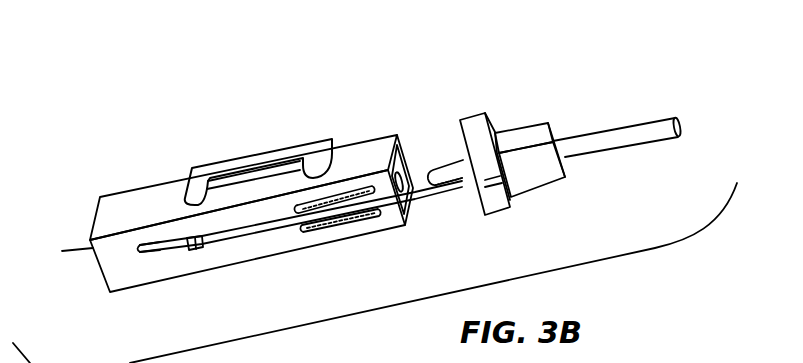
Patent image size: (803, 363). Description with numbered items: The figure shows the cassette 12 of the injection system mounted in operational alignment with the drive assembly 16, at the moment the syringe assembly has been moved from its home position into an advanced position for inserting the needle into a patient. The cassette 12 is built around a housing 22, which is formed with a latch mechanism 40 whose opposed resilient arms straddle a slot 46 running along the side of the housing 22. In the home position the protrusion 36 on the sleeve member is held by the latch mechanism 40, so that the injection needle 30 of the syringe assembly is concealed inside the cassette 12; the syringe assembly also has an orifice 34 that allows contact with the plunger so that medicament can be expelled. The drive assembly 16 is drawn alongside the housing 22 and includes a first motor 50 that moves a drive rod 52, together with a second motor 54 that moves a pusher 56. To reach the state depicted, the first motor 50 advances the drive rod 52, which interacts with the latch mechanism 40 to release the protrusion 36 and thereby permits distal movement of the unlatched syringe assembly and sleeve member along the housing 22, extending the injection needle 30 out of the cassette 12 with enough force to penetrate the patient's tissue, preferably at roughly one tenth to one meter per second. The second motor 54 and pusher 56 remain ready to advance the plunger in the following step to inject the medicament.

The cassette 12 is at (267, 145).
The drive assembly 16 is at (588, 148).
The housing 22 is at (140, 198).
The injection needle 30 is at (77, 253).
The orifice 34 is at (401, 140).
The protrusion 36 is at (197, 251).
The latch mechanism 40 is at (300, 233).
The slot 46 is at (137, 252).
The first motor 50 is at (476, 123).
The drive rod 52 is at (444, 203).
The second motor 54 is at (537, 181).
The pusher 56 is at (639, 130).